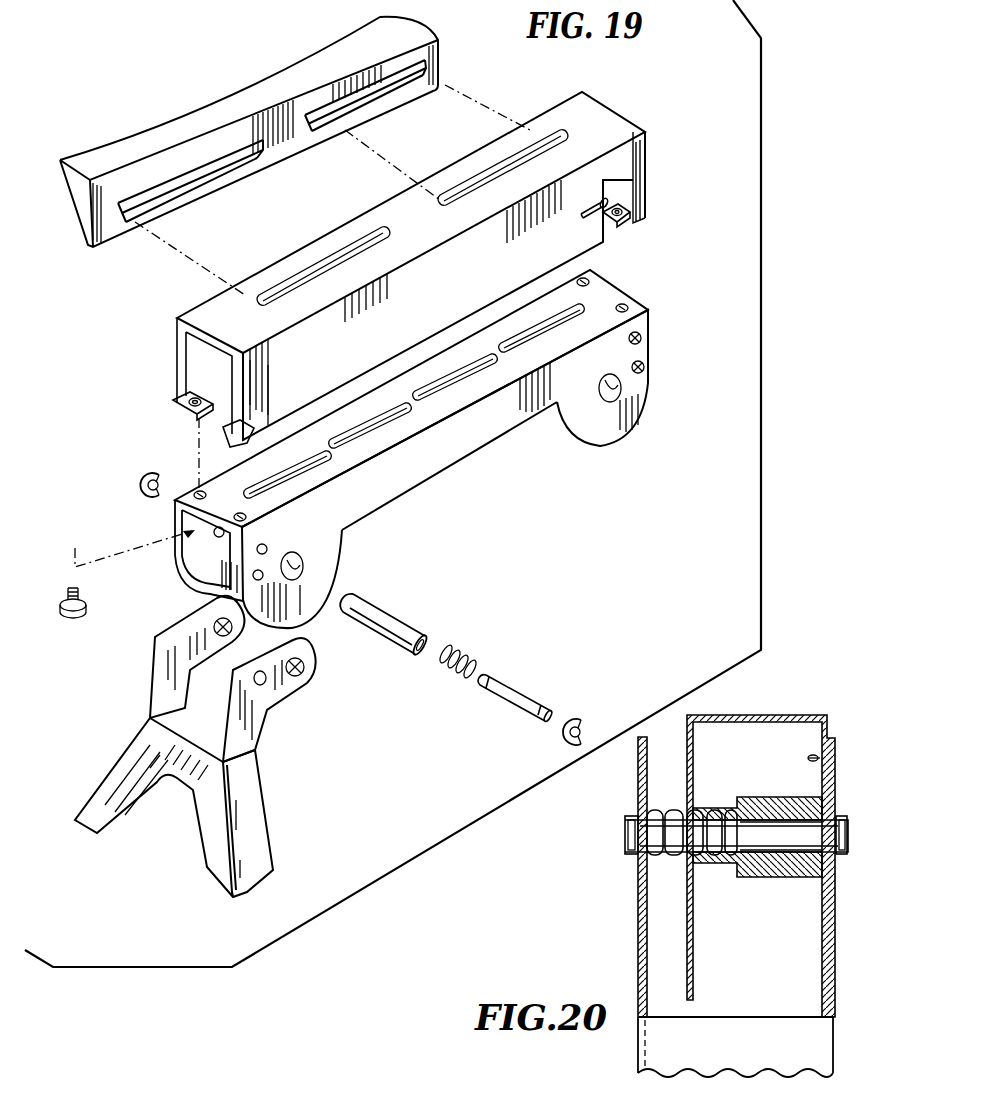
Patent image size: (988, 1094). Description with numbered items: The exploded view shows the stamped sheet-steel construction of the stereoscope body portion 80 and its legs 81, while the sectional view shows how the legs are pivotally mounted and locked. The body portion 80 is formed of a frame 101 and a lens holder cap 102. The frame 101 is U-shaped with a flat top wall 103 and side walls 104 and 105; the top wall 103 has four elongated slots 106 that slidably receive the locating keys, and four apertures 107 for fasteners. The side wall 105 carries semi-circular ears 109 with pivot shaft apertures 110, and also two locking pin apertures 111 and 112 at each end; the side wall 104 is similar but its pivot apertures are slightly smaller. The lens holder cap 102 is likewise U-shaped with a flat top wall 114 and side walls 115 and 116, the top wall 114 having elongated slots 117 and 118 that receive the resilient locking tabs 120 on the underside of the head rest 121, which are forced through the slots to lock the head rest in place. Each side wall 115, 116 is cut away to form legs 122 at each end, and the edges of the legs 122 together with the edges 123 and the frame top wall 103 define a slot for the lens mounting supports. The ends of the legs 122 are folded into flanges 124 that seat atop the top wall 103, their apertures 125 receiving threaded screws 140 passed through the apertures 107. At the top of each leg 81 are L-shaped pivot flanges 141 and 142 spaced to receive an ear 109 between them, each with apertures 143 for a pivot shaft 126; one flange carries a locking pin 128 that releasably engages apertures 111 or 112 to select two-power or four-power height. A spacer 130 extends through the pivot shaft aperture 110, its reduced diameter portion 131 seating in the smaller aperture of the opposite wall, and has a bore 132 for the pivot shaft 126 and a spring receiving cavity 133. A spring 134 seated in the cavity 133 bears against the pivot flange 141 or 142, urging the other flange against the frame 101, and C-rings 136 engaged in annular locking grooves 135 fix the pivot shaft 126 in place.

In FIG. 19, the body portion 80 is at (184, 440).
In FIG. 19, the legs 81 is at (220, 746).
In FIG. 20, the legs 81 is at (638, 1045).
In FIG. 19, the frame 101 is at (415, 459).
In FIG. 19, the lens holder cap 102 is at (401, 269).
In FIG. 19, the top wall 103 is at (598, 300).
In FIG. 19, the side wall 104 is at (172, 558).
In FIG. 19, the side wall 105 is at (368, 491).
In FIG. 19, the elongated slots 106 is at (537, 330).
In FIG. 19, the apertures 107 is at (202, 492).
In FIG. 19, the ears 109 is at (612, 427).
In FIG. 19, the pivot shaft apertures 110 is at (222, 537).
In FIG. 19, the locking pin aperture 111 is at (263, 545).
In FIG. 19, the locking pin aperture 112 is at (262, 572).
In FIG. 19, the top wall 114 is at (230, 313).
In FIG. 19, the side wall 115 is at (175, 325).
In FIG. 19, the side wall 116 is at (322, 338).
In FIG. 19, the elongated slot 117 is at (312, 275).
In FIG. 19, the elongated slot 118 is at (482, 182).
In FIG. 19, the locking tabs 120 is at (388, 82).
In FIG. 19, the head rest 121 is at (274, 124).
In FIG. 19, the legs 122 is at (180, 362).
In FIG. 19, the edges 123 is at (420, 294).
In FIG. 19, the flange 124 is at (197, 412).
In FIG. 19, the apertures 125 is at (185, 398).
In FIG. 19, the pivot shaft 126 is at (530, 690).
In FIG. 19, the locking pin 128 is at (255, 690).
In FIG. 20, the locking pin 128 is at (812, 759).
In FIG. 19, the spacer 130 is at (393, 605).
In FIG. 20, the spacer 130 is at (757, 845).
In FIG. 19, the reduced diameter portion 131 is at (416, 611).
In FIG. 20, the reduced diameter portion 131 is at (706, 884).
In FIG. 20, the bore 132 is at (751, 803).
In FIG. 19, the spring receiving cavity 133 is at (428, 643).
In FIG. 20, the spring receiving cavity 133 is at (700, 862).
In FIG. 19, the spring 134 is at (465, 674).
In FIG. 20, the spring 134 is at (697, 830).
In FIG. 19, the annular locking grooves 135 is at (490, 682).
In FIG. 19, the C-rings 136 is at (140, 480).
In FIG. 20, the C-rings 136 is at (837, 807).
In FIG. 19, the threaded screws 140 is at (66, 590).
In FIG. 19, the pivot flange 141 is at (177, 660).
In FIG. 20, the pivot flange 141 is at (638, 925).
In FIG. 19, the pivot flange 142 is at (287, 690).
In FIG. 20, the pivot flange 142 is at (830, 945).
In FIG. 19, the apertures 143 is at (225, 640).